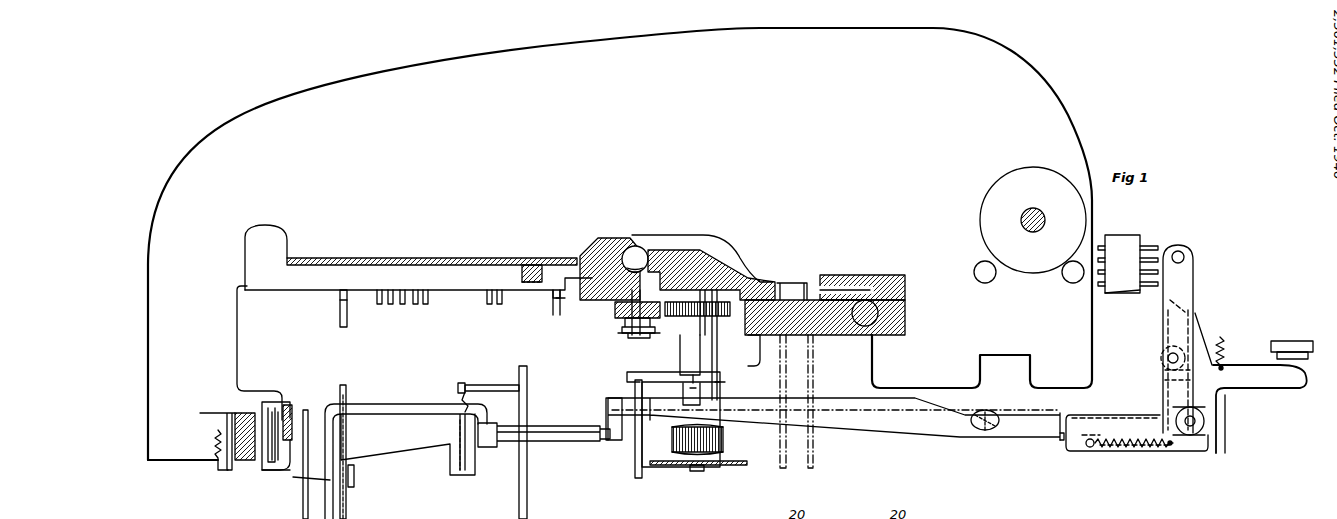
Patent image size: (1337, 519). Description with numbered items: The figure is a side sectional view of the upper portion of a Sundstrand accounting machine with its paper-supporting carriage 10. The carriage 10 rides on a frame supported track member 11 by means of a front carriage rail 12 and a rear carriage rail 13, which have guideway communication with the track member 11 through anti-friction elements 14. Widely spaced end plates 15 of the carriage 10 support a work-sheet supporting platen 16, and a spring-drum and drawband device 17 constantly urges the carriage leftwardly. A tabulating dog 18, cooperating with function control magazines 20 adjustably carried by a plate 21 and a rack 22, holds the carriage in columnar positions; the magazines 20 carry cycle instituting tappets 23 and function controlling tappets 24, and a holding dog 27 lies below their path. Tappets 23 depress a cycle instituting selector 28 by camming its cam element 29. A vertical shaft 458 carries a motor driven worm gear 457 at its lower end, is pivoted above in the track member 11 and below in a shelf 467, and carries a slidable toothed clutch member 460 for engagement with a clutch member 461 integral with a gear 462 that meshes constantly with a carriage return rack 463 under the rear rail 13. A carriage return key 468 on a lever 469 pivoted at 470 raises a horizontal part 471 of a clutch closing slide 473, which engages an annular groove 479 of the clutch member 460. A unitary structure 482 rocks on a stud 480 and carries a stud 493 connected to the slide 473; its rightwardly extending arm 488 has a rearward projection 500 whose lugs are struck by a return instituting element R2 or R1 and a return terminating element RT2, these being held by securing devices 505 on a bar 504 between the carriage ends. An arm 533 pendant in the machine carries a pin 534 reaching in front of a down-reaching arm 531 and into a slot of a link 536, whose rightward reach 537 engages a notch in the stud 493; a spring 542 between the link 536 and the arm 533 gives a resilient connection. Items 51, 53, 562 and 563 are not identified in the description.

The carriage 10 is at (1034, 66).
The end plates 15 is at (805, 115).
The work-sheet supporting platen 16 is at (1018, 170).
The rear carriage rail 13 is at (602, 240).
The anti-friction elements 14 is at (632, 246).
The plate 21 is at (352, 257).
The function control magazines 20 is at (448, 257).
The rack 22 is at (521, 270).
The track member 11 is at (772, 282).
The front carriage rail 12 is at (906, 300).
The cycle instituting tappets 23 is at (418, 286).
The cycle instituting selector 28 is at (332, 319).
The cam element 29 is at (348, 312).
The function controlling tappets 24 is at (415, 305).
The tabulating dog 18 is at (551, 300).
The holding dog 27 is at (560, 312).
The carriage return rack 463 is at (614, 309).
The washer 562 is at (622, 321).
The lock nut 563 is at (632, 339).
The gear 462 is at (688, 317).
The toothed clutch member 461 is at (712, 317).
The toothed clutch member 460 is at (717, 340).
The horizontal part 471 is at (645, 375).
The annular groove 479 is at (715, 380).
The rightward reach 537 is at (607, 406).
The stud 480 is at (502, 402).
The post 51 is at (347, 392).
The carriage return instituting element R2 is at (280, 400).
The rearward projection 500 is at (290, 404).
The carriage return instituting element R1 is at (272, 414).
The bar 504 is at (227, 428).
The securing devices 505 is at (222, 470).
The return terminating element RT2 is at (290, 468).
The rightwardly extending arm 488 is at (304, 483).
The stud 53 is at (346, 507).
The unitary structure 482 is at (426, 459).
The stud 493 is at (546, 442).
The clutch closing slide 473 is at (634, 468).
The shaft 458 is at (695, 472).
The shelf 467 is at (735, 466).
The worm gear 457 is at (725, 440).
The spring-drum and drawband device 17 is at (815, 440).
The link 536 is at (950, 432).
The pivot 470 is at (985, 410).
The down-reaching arm 531 is at (1162, 383).
The arm 533 is at (1184, 288).
The carriage return key 468 is at (1290, 340).
The lever 469 is at (1226, 437).
The spring 542 is at (1114, 452).
The pin 534 is at (1190, 447).